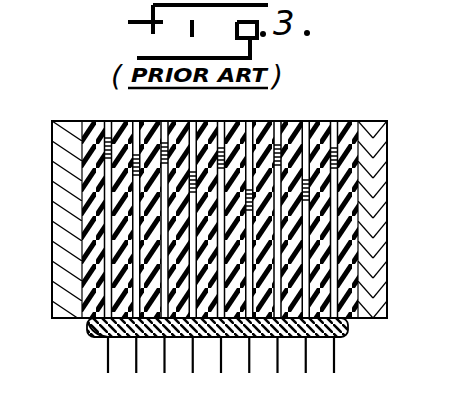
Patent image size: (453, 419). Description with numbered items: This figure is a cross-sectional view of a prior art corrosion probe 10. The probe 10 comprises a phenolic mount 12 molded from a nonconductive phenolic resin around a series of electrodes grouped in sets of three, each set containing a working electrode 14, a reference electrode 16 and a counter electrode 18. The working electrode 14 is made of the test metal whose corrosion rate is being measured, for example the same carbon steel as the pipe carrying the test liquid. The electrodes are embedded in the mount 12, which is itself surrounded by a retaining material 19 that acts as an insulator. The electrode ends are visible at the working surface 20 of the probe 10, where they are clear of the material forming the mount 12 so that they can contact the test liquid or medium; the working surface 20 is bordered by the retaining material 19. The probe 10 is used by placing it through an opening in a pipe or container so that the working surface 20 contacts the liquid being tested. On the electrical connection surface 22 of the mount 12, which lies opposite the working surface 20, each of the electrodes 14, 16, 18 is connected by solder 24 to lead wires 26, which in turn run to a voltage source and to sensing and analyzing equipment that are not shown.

The probe 10 is at (406, 117).
The phenolic mount 12 is at (352, 202).
The working electrode 14 is at (162, 121).
The reference electrode 16 is at (128, 121).
The counter electrode 18 is at (97, 121).
The retaining material 19 is at (388, 147).
The working surface 20 is at (350, 120).
The electrical connection surface 22 is at (357, 322).
The solder 24 is at (108, 336).
The lead wires 26 is at (306, 358).